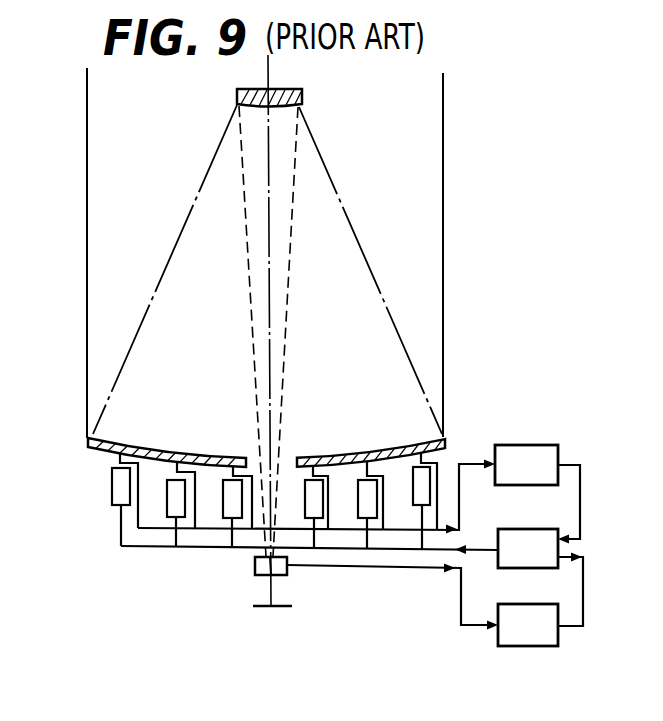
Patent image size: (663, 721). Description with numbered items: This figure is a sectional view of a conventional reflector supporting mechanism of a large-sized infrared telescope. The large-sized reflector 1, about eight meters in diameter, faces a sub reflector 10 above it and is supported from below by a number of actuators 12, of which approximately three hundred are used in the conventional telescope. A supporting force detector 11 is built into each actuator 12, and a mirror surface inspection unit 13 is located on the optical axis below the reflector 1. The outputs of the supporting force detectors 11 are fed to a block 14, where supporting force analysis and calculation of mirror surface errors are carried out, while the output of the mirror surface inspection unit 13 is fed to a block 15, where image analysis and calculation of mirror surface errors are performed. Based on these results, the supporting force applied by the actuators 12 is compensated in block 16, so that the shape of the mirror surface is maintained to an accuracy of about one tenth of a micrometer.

The reflector 1 is at (236, 425).
The sub reflector 10 is at (303, 96).
The supporting force detector 11 is at (118, 463).
The actuator 12 is at (117, 482).
The mirror surface inspection unit 13 is at (287, 575).
The supporting force analysis/calculation unit 14 is at (528, 448).
The image analysis/calculation unit 15 is at (498, 635).
The supporting force compensation unit 16 is at (511, 544).